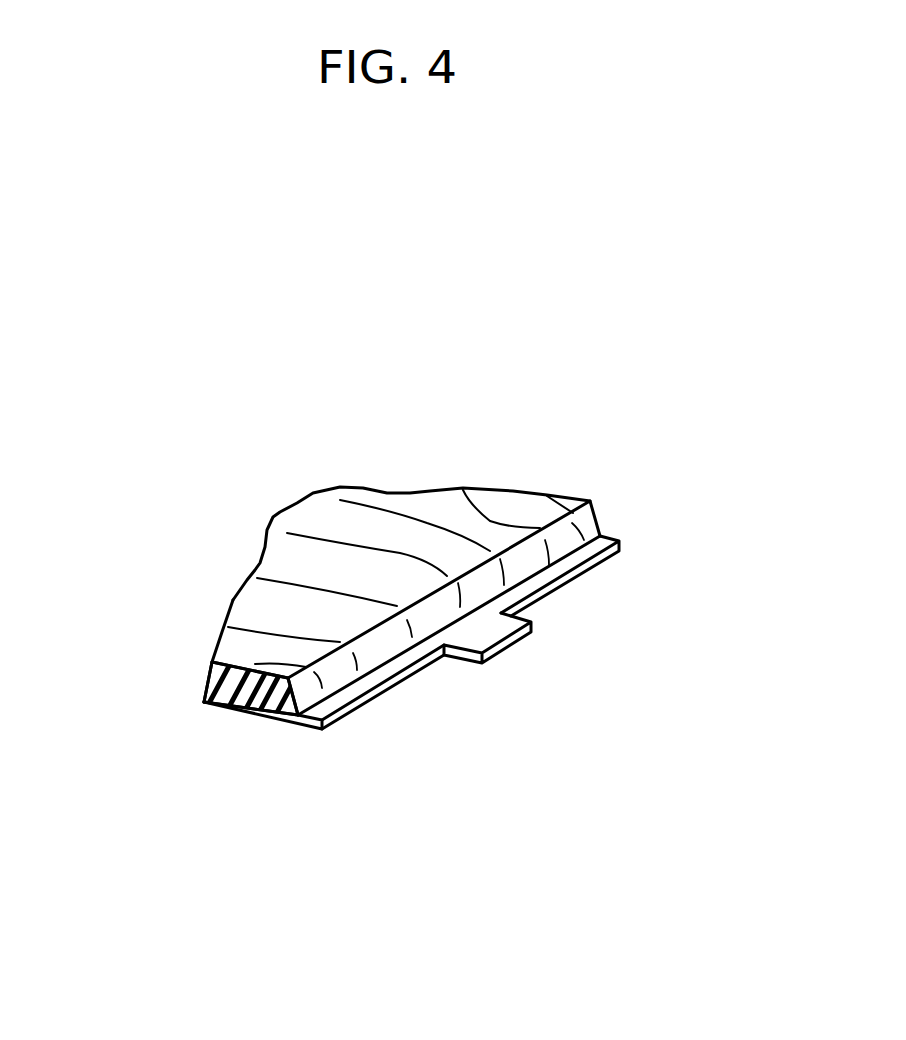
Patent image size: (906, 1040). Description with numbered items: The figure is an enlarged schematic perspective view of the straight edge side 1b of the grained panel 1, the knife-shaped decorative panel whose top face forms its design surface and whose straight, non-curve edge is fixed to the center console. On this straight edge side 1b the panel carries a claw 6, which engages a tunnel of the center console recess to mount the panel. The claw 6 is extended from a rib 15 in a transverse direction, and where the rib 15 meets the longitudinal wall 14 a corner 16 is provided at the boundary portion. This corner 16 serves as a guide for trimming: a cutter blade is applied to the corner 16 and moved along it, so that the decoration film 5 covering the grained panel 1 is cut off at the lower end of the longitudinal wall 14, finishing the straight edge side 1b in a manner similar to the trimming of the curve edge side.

The grained panel 1 is at (362, 432).
The straight edge side 1b is at (582, 630).
The decoration film 5 is at (253, 602).
The claw 6 is at (506, 648).
The longitudinal wall 14 is at (308, 687).
The rib 15 is at (383, 693).
The corner 16 is at (604, 538).